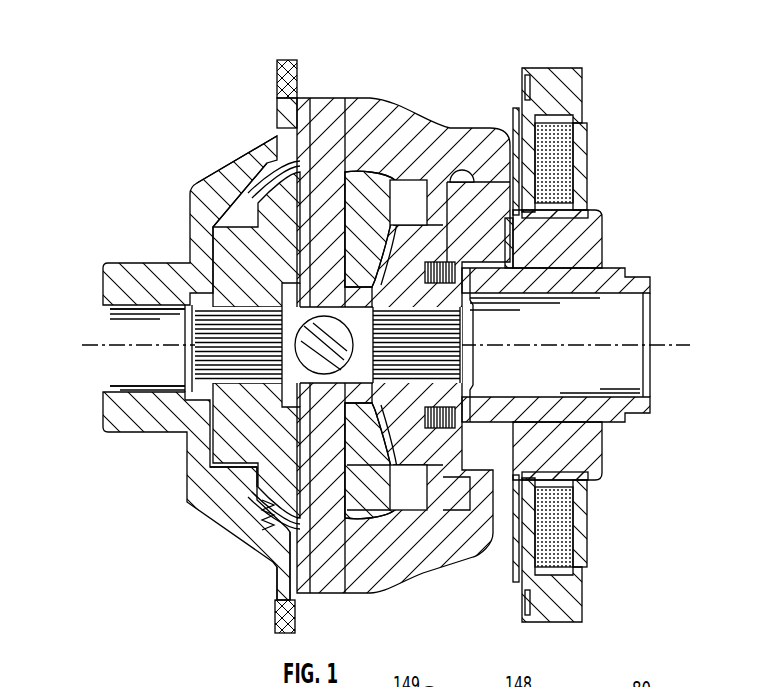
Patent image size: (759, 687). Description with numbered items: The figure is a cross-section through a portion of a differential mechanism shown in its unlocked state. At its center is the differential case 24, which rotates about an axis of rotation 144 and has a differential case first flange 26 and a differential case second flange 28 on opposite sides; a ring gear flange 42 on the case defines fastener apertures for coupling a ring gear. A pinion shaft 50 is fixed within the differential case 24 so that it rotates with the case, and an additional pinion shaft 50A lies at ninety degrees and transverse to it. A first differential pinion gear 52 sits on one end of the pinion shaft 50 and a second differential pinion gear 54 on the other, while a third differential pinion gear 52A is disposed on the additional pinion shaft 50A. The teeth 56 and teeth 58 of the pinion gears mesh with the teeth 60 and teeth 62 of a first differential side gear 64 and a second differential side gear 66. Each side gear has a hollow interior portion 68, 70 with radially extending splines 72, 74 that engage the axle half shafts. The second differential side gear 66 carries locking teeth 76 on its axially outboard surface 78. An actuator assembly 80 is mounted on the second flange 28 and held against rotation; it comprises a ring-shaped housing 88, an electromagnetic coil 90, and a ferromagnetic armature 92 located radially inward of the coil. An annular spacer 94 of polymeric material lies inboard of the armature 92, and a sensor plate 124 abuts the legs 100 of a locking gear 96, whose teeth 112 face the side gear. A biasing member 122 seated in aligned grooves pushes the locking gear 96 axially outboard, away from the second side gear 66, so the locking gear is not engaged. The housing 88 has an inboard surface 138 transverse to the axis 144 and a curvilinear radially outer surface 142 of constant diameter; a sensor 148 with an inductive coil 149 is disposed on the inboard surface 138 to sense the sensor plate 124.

The differential case 24 is at (358, 97).
The differential case first flange 26 is at (136, 262).
The differential case second flange 28 is at (640, 270).
The ring gear flange 42 is at (277, 70).
The pinion shaft 50 is at (300, 568).
The additional pinion shaft 50A is at (195, 316).
The first differential pinion gear 52 is at (270, 184).
The third differential pinion gear 52A is at (285, 318).
The second differential pinion gear 54 is at (250, 506).
The teeth of first differential pinion gear 56 is at (258, 222).
The teeth of second differential pinion gear 58 is at (262, 492).
The teeth of first differential side gear 60 is at (200, 210).
The teeth of second differential side gear 62 is at (387, 476).
The first differential side gear 64 is at (110, 300).
The second differential side gear 66 is at (416, 490).
The hollow interior portion of first differential side gear 68 is at (193, 413).
The hollow interior portion of second differential side gear 70 is at (428, 407).
The splines of first differential side gear 72 is at (188, 368).
The splines of second differential side gear 74 is at (395, 373).
The locking teeth 76 is at (430, 252).
The axially outboard surface 78 is at (433, 248).
The actuator assembly 80 is at (580, 52).
The housing 88 is at (577, 136).
The electromagnetic coil 90 is at (570, 182).
The armature 92 is at (602, 228).
The annular spacer 94 is at (563, 216).
The locking gear 96 is at (462, 170).
The legs of locking gear 100 is at (500, 198).
The teeth of locking gear 112 is at (445, 512).
The biasing member 122 is at (470, 400).
The sensor plate 124 is at (513, 572).
The inboard surface of housing 138 is at (458, 678).
The radially outer surface of housing 142 is at (561, 679).
The axis of rotation 144 is at (592, 346).
The sensor 148 is at (530, 90).
The inductive coil 149 is at (525, 87).